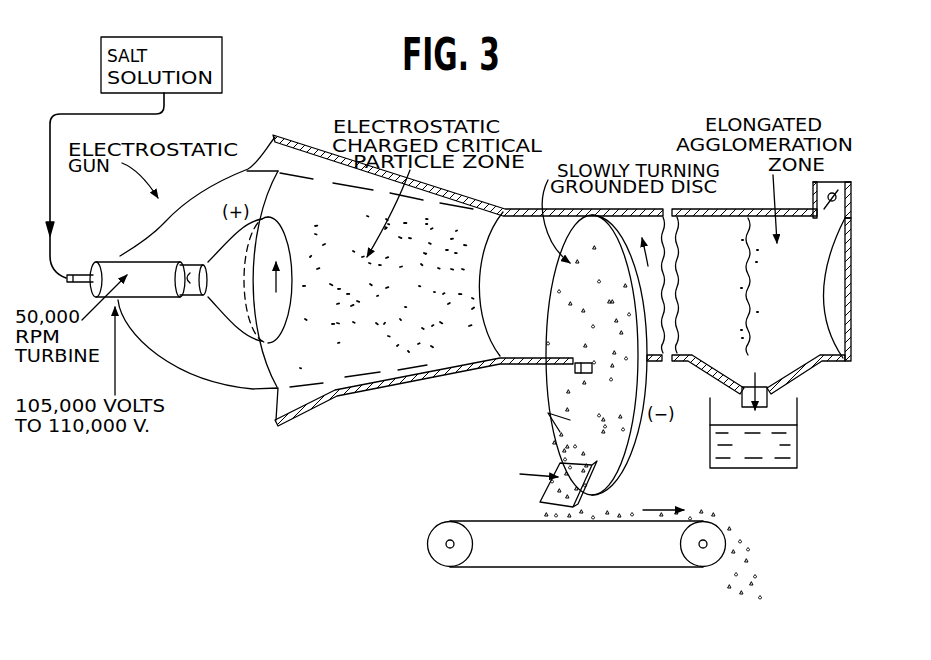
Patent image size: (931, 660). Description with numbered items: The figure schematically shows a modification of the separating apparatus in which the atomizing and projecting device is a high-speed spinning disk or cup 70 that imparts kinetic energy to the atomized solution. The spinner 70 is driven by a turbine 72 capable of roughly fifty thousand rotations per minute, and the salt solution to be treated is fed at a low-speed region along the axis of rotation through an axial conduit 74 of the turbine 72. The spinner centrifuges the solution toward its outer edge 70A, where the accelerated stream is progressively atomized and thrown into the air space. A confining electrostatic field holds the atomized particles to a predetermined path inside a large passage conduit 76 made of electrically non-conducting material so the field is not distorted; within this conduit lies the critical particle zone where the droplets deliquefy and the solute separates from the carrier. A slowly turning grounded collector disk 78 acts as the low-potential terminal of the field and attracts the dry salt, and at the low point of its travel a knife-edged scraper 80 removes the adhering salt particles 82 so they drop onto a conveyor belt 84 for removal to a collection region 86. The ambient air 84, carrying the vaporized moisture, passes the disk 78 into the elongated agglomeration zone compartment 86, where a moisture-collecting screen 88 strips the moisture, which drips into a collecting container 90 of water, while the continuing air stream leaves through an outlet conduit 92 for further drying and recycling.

The spinning disk or cup 70 is at (257, 351).
The outer edge of the spinner 70A is at (288, 330).
The turbine 72 is at (108, 258).
The axial conduit 74 is at (77, 283).
The passage conduit 76 is at (365, 378).
The grounded collector disk 78 is at (533, 380).
The scraper 80 is at (542, 466).
The salt particles 82 is at (548, 413).
The conveyor belt 84 is at (618, 523).
The collection region 86 is at (757, 624).
The moisture-collecting screen 88 is at (767, 286).
The collecting container 90 is at (795, 455).
The outlet conduit 92 is at (816, 194).